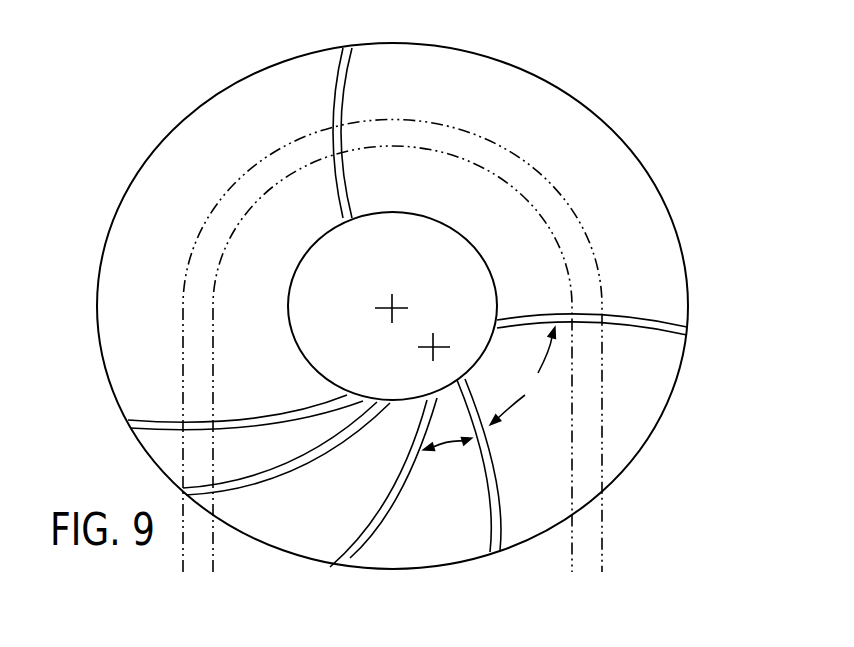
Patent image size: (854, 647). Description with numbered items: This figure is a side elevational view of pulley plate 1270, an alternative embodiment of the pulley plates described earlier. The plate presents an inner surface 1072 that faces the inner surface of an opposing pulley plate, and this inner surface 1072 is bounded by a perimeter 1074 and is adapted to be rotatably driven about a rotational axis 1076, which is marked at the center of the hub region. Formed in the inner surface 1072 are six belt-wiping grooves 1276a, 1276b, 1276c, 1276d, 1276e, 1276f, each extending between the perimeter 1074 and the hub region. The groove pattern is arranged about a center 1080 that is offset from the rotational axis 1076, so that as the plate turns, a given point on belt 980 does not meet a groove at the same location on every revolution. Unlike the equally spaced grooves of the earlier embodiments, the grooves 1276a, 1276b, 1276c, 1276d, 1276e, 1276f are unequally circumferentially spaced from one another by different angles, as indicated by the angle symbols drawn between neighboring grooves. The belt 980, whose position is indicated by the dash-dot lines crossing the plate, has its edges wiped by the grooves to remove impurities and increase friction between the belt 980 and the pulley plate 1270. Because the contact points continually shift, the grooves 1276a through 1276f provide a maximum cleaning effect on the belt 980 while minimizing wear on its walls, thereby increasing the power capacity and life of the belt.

The pulley plate 1270 is at (106, 122).
The inner surface 1072 is at (485, 83).
The perimeter 1074 is at (603, 123).
The rotational axis 1076 is at (390, 306).
The center 1080 is at (435, 347).
The belt-wiping groove 1276a is at (487, 537).
The belt-wiping groove 1276b is at (362, 545).
The belt-wiping groove 1276c is at (229, 490).
The belt-wiping groove 1276d is at (148, 417).
The belt-wiping groove 1276e is at (337, 82).
The belt-wiping groove 1276f is at (656, 319).
The belt 980 is at (602, 553).